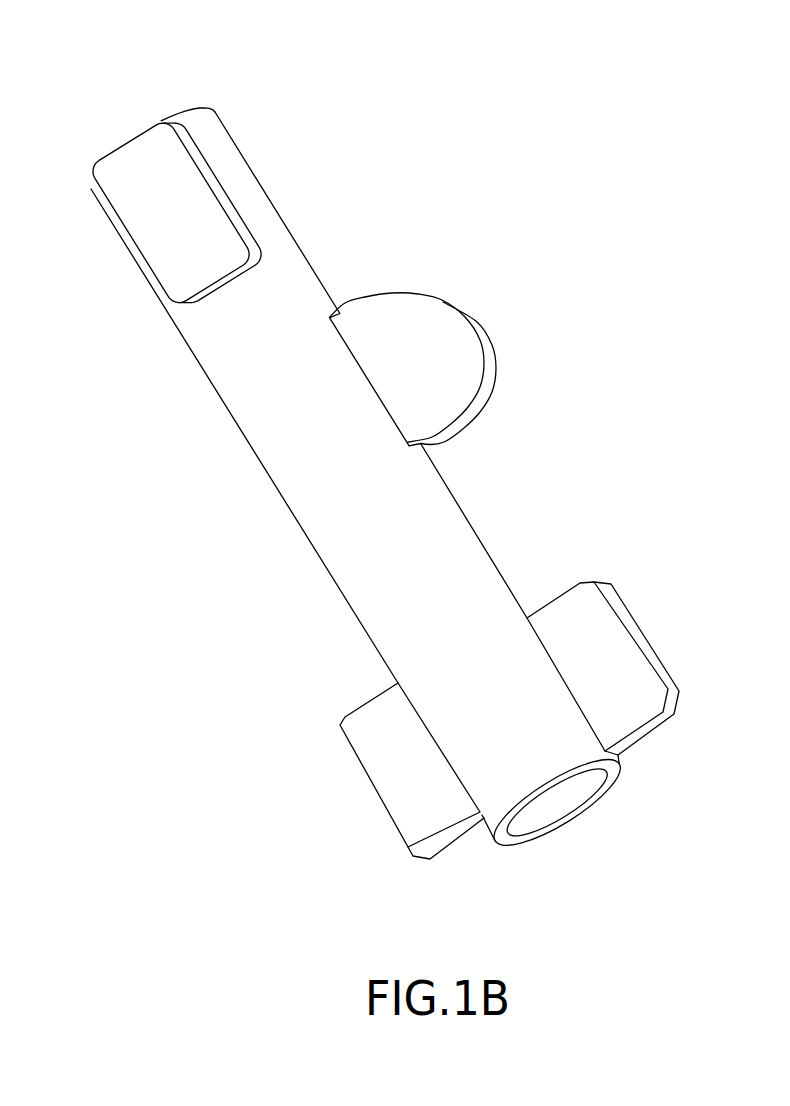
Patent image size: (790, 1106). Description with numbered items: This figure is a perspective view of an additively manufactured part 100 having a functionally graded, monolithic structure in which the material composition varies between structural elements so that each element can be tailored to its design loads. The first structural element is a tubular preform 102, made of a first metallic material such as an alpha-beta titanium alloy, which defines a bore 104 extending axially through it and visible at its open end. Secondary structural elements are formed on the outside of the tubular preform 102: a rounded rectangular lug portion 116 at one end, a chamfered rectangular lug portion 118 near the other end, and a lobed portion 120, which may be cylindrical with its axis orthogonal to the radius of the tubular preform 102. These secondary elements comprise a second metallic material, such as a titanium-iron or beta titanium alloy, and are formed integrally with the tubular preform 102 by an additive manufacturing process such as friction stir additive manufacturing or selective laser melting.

The additively manufactured part 100 is at (372, 452).
The tubular preform 102 is at (308, 483).
The bore 104 is at (547, 808).
The rounded rectangular lug portion 116 is at (127, 212).
The chamfered rectangular lug portion 118 is at (605, 624).
The lobed portion 120 is at (453, 333).